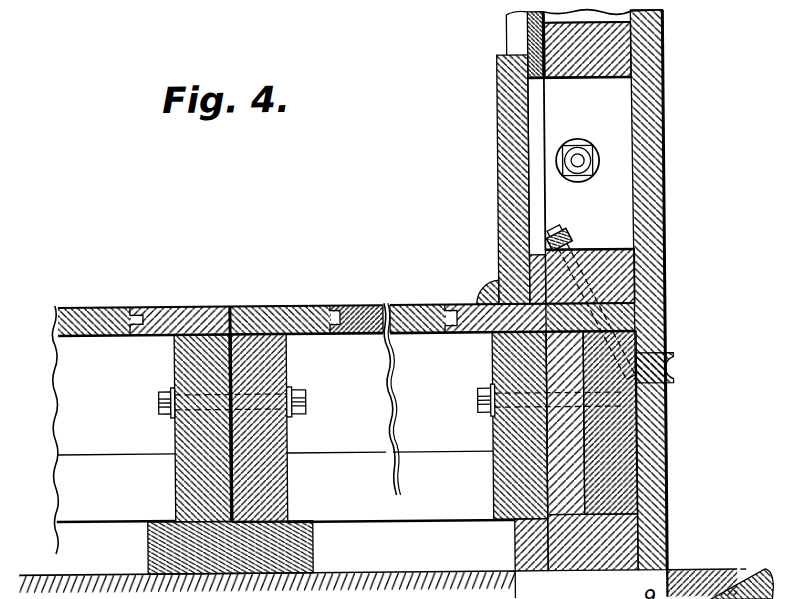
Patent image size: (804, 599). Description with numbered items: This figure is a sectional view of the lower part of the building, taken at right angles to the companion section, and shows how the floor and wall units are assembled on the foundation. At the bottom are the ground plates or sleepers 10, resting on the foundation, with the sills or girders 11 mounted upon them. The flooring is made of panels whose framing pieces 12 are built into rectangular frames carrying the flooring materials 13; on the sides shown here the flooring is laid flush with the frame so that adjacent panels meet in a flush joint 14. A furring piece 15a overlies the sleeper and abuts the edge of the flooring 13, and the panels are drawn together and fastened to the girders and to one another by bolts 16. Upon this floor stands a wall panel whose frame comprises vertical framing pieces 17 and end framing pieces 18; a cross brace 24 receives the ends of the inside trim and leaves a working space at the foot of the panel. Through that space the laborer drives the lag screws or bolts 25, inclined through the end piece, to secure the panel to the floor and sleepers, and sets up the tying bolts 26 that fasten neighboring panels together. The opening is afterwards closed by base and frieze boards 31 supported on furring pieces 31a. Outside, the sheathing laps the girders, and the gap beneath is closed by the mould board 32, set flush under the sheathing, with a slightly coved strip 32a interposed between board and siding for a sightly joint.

The ground plates or sleepers 10 is at (310, 549).
The sills or girders 11 is at (622, 464).
The framing pieces 12 is at (272, 447).
The flooring materials 13 is at (383, 305).
The flush joint 14 is at (228, 306).
The furring piece 15a is at (632, 319).
The bolts 16 is at (301, 389).
The vertical framing pieces 17 is at (573, 166).
The end framing pieces 18 is at (626, 265).
The cross brace 24 is at (622, 49).
The lag screws or bolts 25 is at (571, 231).
The tying bolts 26 is at (605, 134).
The base and frieze boards 31 is at (513, 158).
The furring pieces 31a is at (540, 274).
The mould board 32 is at (660, 512).
The coved strip 32a is at (663, 377).